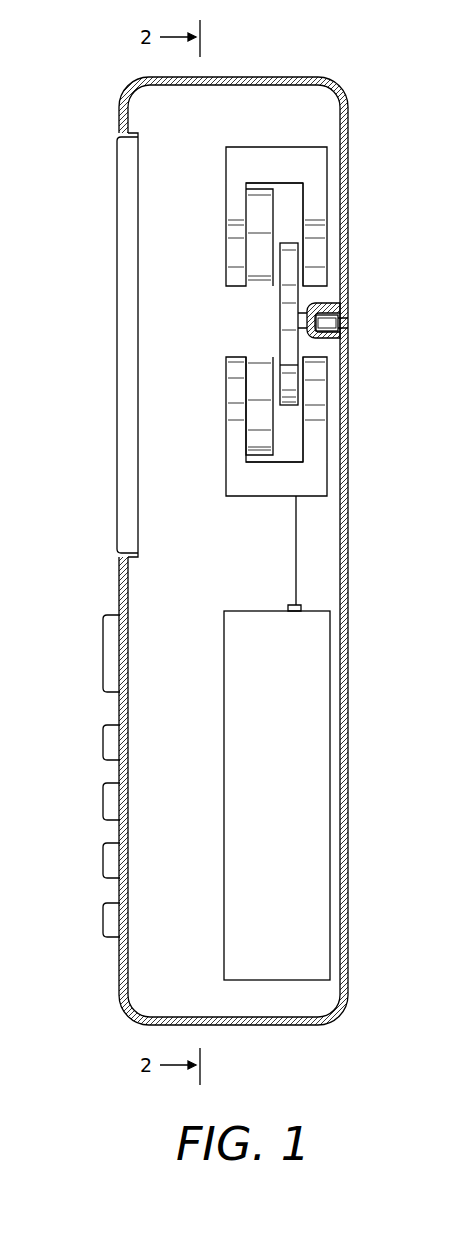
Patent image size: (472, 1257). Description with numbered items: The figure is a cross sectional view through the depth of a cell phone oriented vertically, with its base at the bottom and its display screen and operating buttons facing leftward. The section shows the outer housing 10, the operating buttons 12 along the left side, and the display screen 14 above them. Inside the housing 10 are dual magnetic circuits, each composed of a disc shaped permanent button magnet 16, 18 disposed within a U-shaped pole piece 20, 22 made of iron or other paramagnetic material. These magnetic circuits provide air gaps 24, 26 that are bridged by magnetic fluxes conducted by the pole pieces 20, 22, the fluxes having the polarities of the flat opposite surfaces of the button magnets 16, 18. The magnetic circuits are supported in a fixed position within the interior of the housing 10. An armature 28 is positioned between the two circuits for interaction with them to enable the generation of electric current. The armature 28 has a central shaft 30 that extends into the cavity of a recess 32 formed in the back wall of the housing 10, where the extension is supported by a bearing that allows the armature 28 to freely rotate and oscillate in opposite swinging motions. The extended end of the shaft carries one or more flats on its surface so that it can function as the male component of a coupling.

The outer housing 10 is at (265, 77).
The operating buttons 12 is at (103, 675).
The display screen 14 is at (117, 300).
The permanent button magnet 16 is at (260, 188).
The permanent button magnet 18 is at (260, 455).
The U-shaped pole piece 20 is at (327, 183).
The U-shaped pole piece 22 is at (327, 478).
The air gap 24 is at (286, 217).
The air gap 26 is at (286, 440).
The armature 28 is at (280, 320).
The central shaft 30 is at (302, 313).
The recess 32 is at (338, 323).